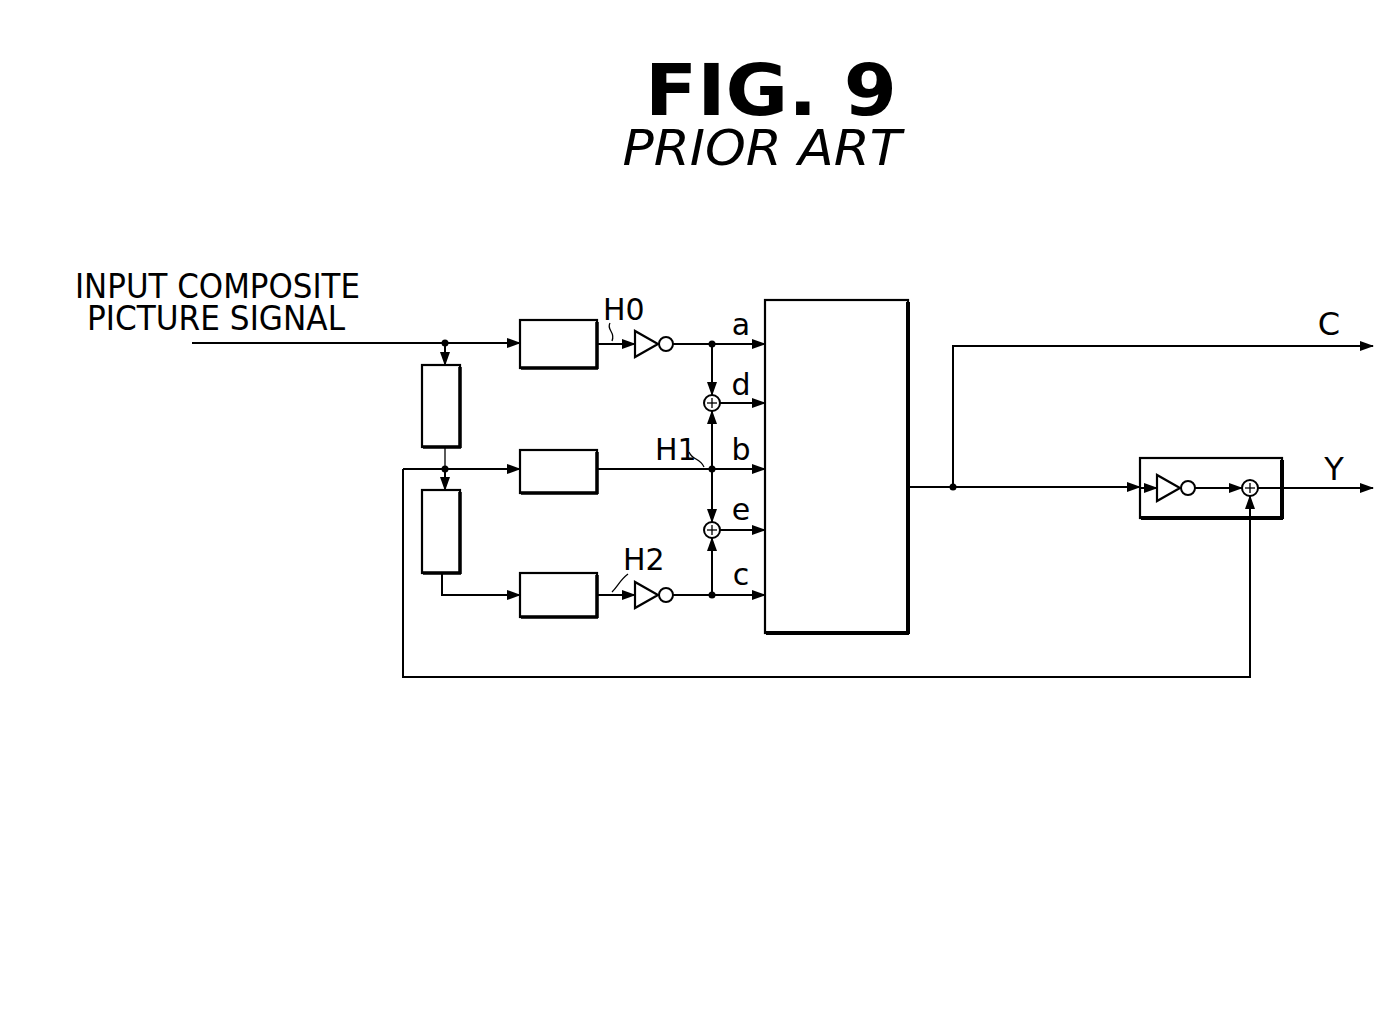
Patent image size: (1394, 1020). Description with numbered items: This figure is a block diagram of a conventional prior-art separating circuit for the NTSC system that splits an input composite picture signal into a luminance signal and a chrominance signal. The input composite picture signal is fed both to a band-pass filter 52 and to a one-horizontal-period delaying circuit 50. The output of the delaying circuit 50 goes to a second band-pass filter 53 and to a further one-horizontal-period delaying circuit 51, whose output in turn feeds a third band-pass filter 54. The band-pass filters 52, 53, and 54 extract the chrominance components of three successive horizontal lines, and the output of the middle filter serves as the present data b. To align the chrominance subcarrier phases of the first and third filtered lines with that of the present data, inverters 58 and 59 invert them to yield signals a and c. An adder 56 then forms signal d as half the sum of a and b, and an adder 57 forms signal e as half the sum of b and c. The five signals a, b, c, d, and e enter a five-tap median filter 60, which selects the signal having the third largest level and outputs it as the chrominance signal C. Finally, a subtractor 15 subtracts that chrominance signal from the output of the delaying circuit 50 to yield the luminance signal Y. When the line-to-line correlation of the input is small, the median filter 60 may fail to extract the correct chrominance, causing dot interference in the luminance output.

The subtractor 15 is at (1207, 458).
The one-horizontal-period (1H) delaying circuit 50 is at (460, 392).
The one-horizontal-period (1H) delaying circuit 51 is at (460, 517).
The band-pass filter 52 is at (583, 372).
The band-pass filter 53 is at (583, 495).
The band-pass filter 54 is at (583, 620).
The adder 56 is at (703, 403).
The adder 57 is at (703, 530).
The inverter 58 is at (652, 332).
The inverter 59 is at (648, 607).
The five-tap median filter 60 is at (912, 340).